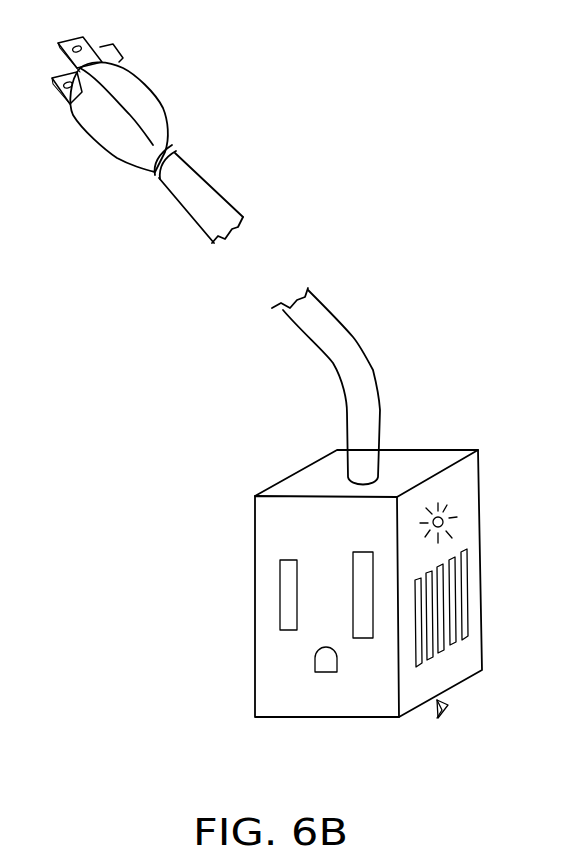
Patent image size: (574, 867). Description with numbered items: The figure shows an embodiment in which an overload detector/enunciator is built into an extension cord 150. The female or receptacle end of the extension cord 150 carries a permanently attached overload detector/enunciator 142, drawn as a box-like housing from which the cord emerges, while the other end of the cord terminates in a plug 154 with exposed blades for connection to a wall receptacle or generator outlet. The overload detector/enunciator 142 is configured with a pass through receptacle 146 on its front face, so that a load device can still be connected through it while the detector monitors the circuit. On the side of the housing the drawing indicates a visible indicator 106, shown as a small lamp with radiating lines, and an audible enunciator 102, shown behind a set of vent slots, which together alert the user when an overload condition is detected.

The plug 154 is at (165, 113).
The extension cord 150 is at (353, 362).
The audible enunciator 102 is at (468, 603).
The visible indicator 106 is at (450, 513).
The pass through receptacle 146 is at (315, 605).
The overload detector/enunciator 142 is at (437, 717).